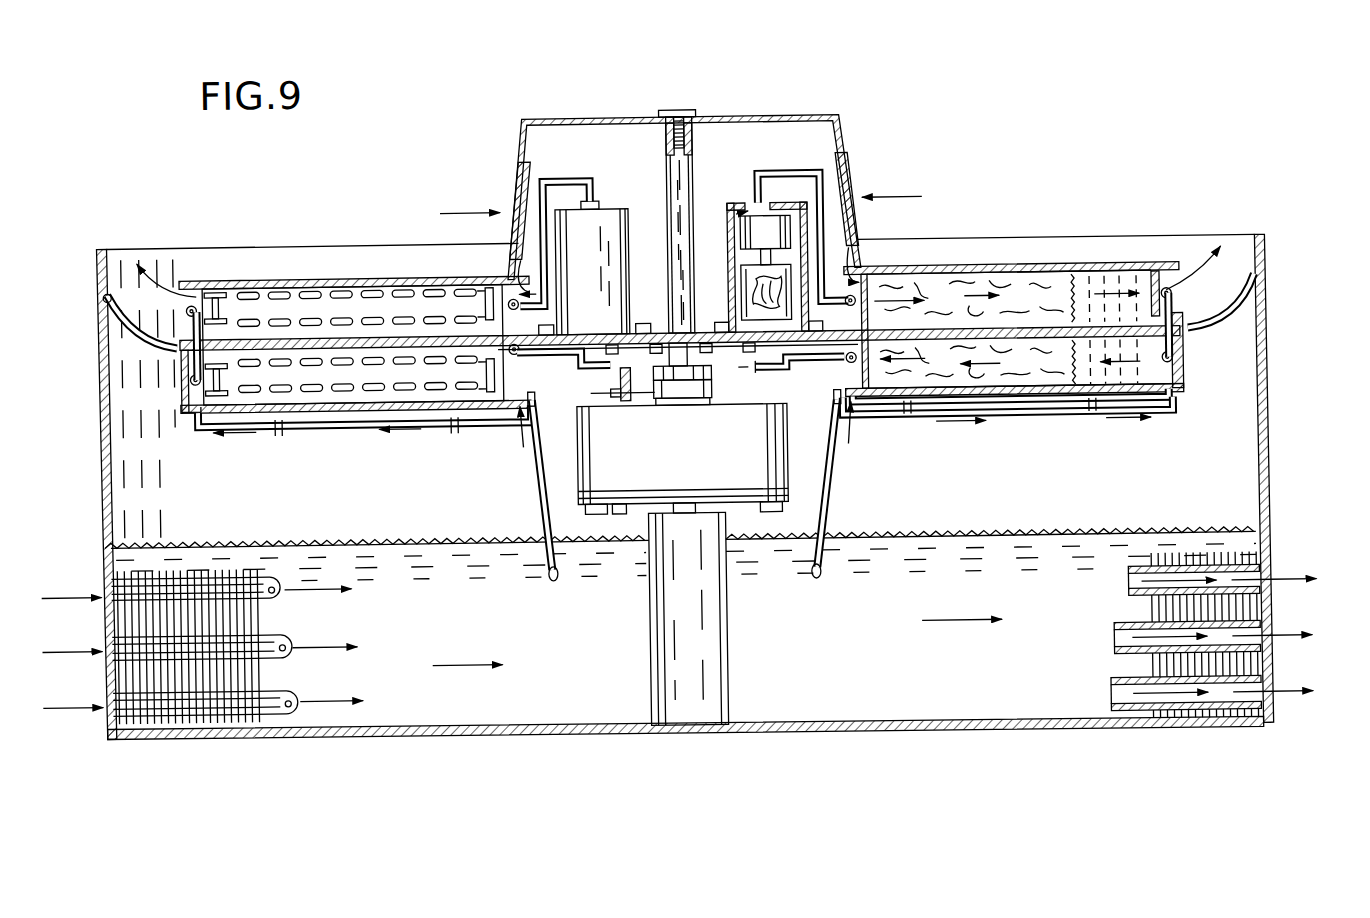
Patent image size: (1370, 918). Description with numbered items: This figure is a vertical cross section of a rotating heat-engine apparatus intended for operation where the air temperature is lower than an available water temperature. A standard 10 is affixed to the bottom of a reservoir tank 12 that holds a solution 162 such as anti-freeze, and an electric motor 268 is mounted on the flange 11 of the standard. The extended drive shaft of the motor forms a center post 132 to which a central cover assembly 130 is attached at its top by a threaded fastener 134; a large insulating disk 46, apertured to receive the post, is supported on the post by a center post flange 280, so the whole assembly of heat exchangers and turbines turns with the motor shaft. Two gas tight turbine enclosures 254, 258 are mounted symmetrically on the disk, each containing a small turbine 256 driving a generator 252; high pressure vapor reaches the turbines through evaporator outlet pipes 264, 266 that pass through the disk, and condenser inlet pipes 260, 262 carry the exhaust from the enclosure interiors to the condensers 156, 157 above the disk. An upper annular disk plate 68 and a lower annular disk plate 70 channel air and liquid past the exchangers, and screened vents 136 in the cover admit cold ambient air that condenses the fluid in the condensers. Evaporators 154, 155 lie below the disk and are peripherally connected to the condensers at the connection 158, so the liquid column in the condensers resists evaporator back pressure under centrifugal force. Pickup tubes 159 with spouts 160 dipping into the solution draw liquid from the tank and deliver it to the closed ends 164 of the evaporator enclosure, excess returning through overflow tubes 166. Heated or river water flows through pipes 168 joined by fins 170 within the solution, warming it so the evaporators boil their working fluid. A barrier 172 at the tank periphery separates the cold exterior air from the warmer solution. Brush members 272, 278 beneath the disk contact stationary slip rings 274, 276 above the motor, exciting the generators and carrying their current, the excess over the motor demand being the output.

The standard 10 is at (650, 643).
The flange 11 is at (622, 513).
The reservoir tank 12 is at (1268, 414).
The disk 46 is at (303, 282).
The upper annular disk plate 68 is at (363, 273).
The lower annular disk plate 70 is at (320, 397).
The central cover assembly 130 is at (812, 117).
The center post 132 is at (693, 160).
The threaded fastener 134 is at (680, 110).
The vents 136 is at (520, 178).
The evaporator 154 is at (263, 368).
The evaporator 155 is at (1033, 386).
The condenser 156 is at (268, 310).
The condenser 157 is at (1012, 266).
The peripheral connection 158 is at (188, 304).
The pickup tubes 159 is at (538, 492).
The spouts 160 is at (548, 575).
The solution 162 is at (1098, 537).
The closed ends 164 is at (181, 376).
The overflow tubes 166 is at (531, 427).
The pipes 168 is at (278, 594).
The fins 170 is at (130, 618).
The barrier 172 is at (115, 334).
The generator 252 is at (731, 215).
The turbine enclosure 254 is at (612, 208).
The turbine 256 is at (795, 272).
The turbine enclosure 258 is at (745, 235).
The condenser inlet pipe 260 is at (800, 175).
The condenser inlet pipe 262 is at (560, 176).
The evaporator outlet pipe 264 is at (808, 362).
The evaporator outlet pipe 266 is at (562, 354).
The electric motor 268 is at (775, 452).
The brush member 272 is at (657, 393).
The slip ring 274 is at (668, 399).
The slip ring 276 is at (690, 381).
The brush member 278 is at (712, 405).
The center post flange 280 is at (666, 290).